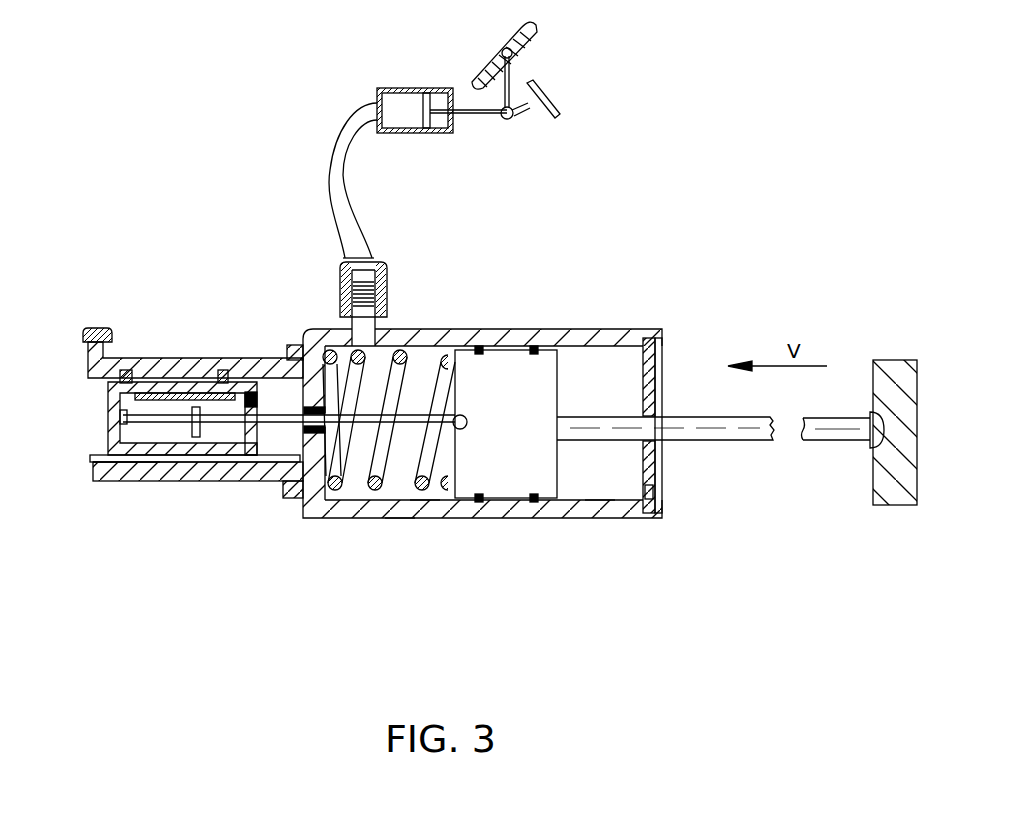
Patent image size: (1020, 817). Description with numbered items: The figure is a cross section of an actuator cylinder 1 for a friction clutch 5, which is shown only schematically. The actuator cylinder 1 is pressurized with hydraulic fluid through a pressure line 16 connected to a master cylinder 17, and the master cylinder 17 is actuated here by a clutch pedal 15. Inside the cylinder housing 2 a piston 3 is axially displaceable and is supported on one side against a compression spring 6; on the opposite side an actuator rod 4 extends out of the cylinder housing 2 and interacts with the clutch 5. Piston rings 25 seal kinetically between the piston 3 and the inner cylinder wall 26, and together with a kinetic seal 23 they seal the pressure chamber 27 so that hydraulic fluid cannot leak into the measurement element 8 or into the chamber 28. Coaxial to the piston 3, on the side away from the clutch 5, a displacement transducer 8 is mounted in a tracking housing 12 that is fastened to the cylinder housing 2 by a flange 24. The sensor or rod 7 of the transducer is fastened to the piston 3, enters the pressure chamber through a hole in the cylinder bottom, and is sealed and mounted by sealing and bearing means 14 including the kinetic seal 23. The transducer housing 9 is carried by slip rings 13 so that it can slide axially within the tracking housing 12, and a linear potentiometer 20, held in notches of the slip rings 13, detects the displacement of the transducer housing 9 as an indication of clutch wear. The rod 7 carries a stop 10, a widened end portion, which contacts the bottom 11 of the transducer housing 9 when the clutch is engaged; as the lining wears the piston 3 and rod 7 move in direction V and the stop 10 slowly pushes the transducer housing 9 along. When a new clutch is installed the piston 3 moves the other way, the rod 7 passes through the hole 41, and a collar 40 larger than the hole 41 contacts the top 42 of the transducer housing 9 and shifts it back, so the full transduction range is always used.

The actuator cylinder 1 is at (472, 322).
The cylinder housing 2 is at (630, 325).
The piston 3 is at (545, 365).
The actuator rod 4 is at (690, 417).
The friction clutch 5 is at (893, 366).
The compression spring 6 is at (423, 487).
The sensor rod 7 is at (360, 490).
The displacement transducer 8 is at (176, 418).
The transducer housing 9 is at (178, 448).
The stop 10 is at (112, 457).
The bottom of transducer housing 11 is at (107, 427).
The tracking housing 12 is at (267, 365).
The slip rings 13 is at (223, 372).
The sealing and bearing means 14 is at (293, 437).
The clutch pedal 15 is at (553, 98).
The pressure line 16 is at (340, 162).
The master cylinder 17 is at (400, 88).
The linear potentiometer 20 is at (93, 457).
The kinetic seal 23 is at (295, 350).
The flange 24 is at (293, 498).
The piston rings 25 is at (533, 502).
The inner cylinder wall 26 is at (652, 492).
The pressure chamber 27 is at (397, 490).
The chamber 28 is at (600, 480).
The collar 40 is at (197, 437).
The hole 41 is at (255, 458).
The top of transducer housing 42 is at (248, 407).